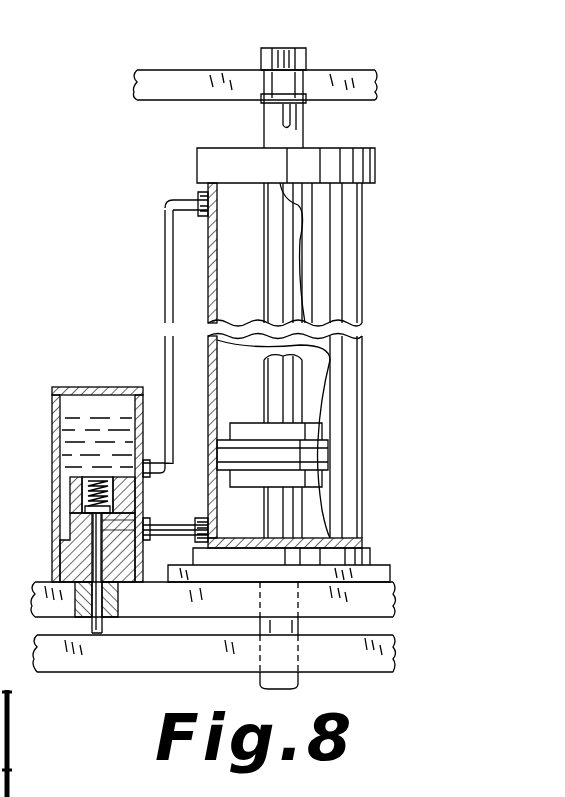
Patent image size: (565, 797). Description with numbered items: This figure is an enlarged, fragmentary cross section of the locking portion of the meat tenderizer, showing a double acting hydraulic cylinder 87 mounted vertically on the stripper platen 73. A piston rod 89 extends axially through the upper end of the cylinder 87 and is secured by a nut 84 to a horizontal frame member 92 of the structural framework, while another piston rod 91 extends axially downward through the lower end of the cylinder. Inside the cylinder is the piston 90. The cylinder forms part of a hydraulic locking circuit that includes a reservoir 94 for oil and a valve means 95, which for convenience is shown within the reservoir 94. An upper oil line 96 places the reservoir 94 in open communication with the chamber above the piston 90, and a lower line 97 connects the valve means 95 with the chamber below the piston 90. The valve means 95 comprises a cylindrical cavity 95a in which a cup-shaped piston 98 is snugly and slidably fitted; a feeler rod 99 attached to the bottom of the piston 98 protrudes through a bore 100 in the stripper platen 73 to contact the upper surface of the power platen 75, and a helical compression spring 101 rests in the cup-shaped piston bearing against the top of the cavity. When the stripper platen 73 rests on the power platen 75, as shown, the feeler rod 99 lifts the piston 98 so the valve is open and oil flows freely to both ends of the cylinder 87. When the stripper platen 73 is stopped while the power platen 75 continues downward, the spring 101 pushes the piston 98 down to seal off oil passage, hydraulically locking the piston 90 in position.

The stripper platen 73 is at (358, 613).
The power platen 75 is at (201, 664).
The nut 84 is at (298, 52).
The hydraulic cylinder 87 is at (362, 262).
The piston rod 89 is at (272, 117).
The piston 90 is at (246, 397).
The piston rod 91 is at (298, 628).
The horizontal frame member 92 is at (187, 73).
The reservoir 94 is at (52, 448).
The valve means 95 is at (69, 564).
The cylindrical cavity 95a is at (108, 527).
The upper oil line 96 is at (165, 247).
The lower line 97 is at (170, 527).
The cup-shaped piston 98 is at (82, 510).
The feeler rod 99 is at (102, 622).
The bore 100 is at (118, 600).
The helical compression spring 101 is at (90, 492).